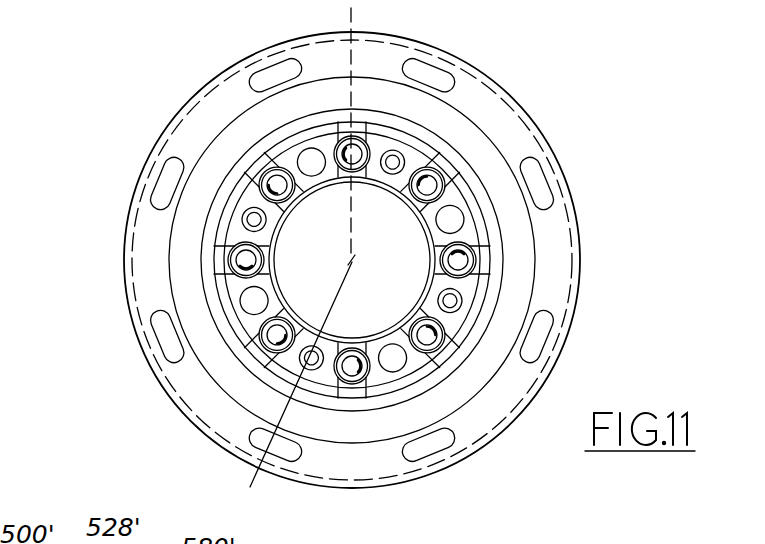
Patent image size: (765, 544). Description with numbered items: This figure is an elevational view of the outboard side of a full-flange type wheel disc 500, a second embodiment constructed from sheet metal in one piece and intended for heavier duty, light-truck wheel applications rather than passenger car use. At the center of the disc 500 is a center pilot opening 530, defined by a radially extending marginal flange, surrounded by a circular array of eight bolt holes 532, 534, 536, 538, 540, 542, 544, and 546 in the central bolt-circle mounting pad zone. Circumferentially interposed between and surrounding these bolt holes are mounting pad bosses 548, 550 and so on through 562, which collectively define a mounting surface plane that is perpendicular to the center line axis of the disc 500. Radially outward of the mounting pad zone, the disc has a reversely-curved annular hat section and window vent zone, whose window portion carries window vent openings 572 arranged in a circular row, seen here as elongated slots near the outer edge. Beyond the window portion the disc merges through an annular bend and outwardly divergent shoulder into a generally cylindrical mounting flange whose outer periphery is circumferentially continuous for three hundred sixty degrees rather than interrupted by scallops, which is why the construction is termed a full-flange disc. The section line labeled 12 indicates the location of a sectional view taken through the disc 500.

The wheel disc 500 is at (528, 107).
The center pilot opening 530 is at (410, 269).
The bolt hole 532 is at (337, 180).
The bolt hole 534 is at (445, 178).
The bolt hole 536 is at (460, 260).
The bolt hole 538 is at (442, 331).
The bolt hole 540 is at (353, 383).
The bolt hole 542 is at (270, 347).
The bolt hole 544 is at (236, 257).
The bolt hole 546 is at (265, 170).
The mounting pad boss 548 is at (395, 138).
The mounting pad boss 550 is at (470, 213).
The mounting pad boss 562 is at (332, 104).
The window vent opening 572 is at (432, 66).
The section line 12- 12 is at (342, 16).